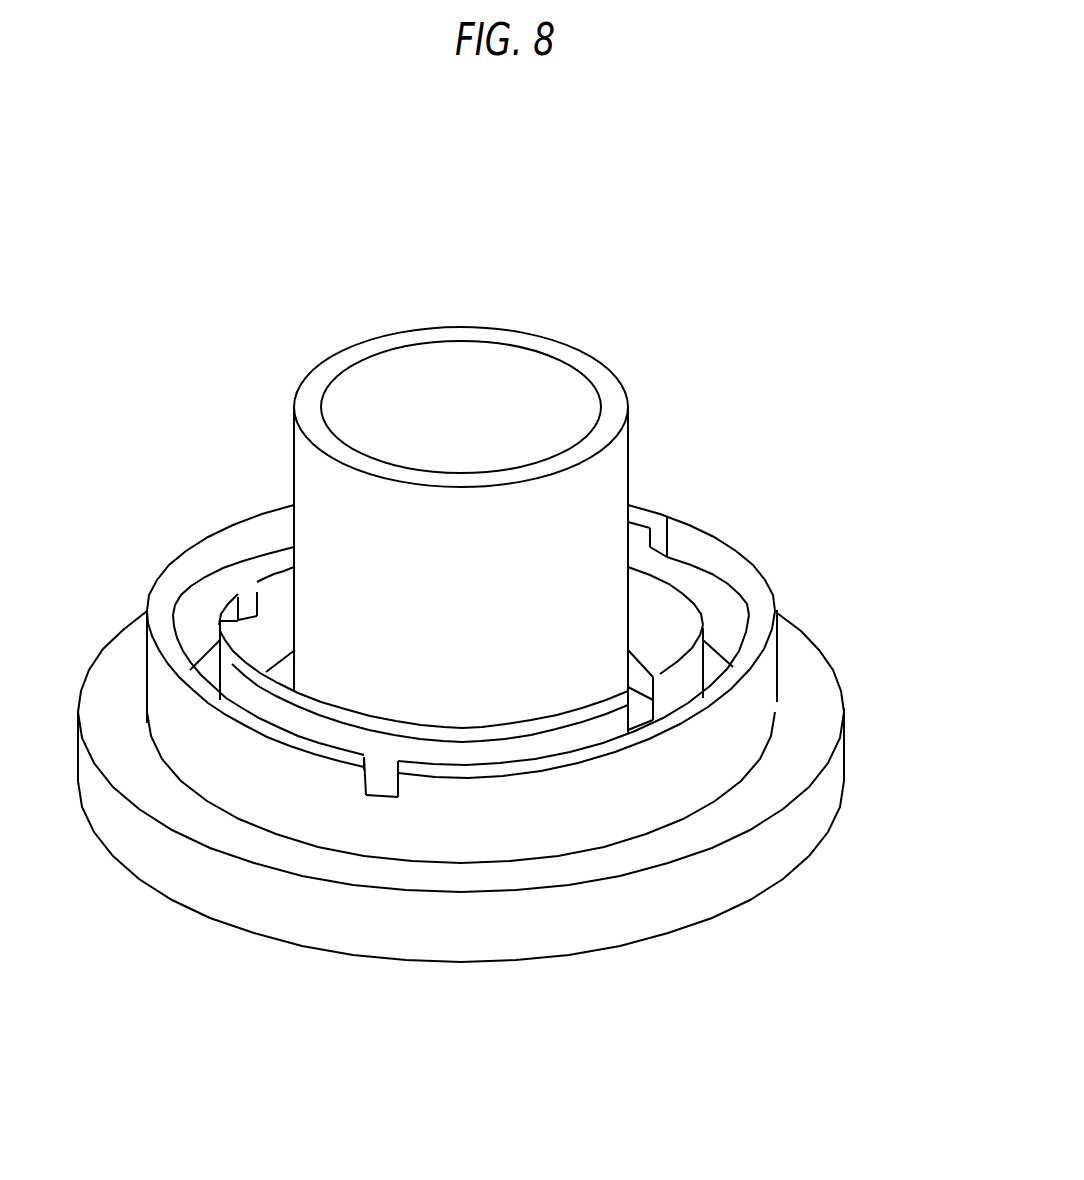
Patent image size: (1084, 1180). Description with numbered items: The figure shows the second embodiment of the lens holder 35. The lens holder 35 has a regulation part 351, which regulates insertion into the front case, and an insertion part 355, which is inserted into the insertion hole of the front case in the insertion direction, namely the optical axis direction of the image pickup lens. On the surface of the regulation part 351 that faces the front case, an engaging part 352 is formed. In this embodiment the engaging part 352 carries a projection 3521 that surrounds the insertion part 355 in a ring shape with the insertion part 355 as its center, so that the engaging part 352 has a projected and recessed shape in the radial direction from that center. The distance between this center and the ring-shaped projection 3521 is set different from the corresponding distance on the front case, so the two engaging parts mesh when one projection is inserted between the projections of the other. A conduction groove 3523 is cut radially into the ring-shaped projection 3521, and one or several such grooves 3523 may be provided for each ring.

The lens holder 35 is at (504, 633).
The regulation part 351 is at (800, 693).
The engaging part 352 is at (494, 702).
The projection 3521 is at (188, 578).
The conduction groove 3523 is at (657, 667).
The insertion part 355 is at (605, 367).